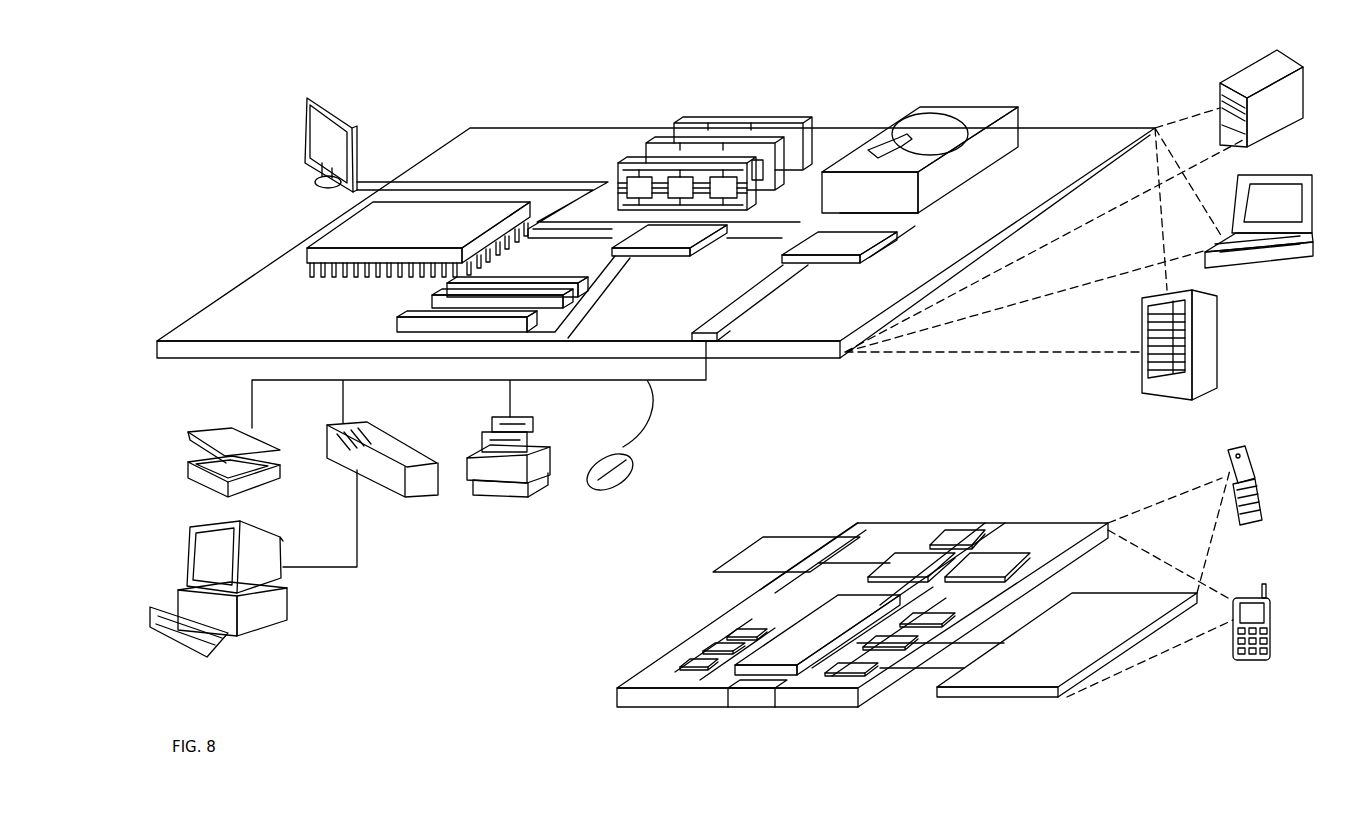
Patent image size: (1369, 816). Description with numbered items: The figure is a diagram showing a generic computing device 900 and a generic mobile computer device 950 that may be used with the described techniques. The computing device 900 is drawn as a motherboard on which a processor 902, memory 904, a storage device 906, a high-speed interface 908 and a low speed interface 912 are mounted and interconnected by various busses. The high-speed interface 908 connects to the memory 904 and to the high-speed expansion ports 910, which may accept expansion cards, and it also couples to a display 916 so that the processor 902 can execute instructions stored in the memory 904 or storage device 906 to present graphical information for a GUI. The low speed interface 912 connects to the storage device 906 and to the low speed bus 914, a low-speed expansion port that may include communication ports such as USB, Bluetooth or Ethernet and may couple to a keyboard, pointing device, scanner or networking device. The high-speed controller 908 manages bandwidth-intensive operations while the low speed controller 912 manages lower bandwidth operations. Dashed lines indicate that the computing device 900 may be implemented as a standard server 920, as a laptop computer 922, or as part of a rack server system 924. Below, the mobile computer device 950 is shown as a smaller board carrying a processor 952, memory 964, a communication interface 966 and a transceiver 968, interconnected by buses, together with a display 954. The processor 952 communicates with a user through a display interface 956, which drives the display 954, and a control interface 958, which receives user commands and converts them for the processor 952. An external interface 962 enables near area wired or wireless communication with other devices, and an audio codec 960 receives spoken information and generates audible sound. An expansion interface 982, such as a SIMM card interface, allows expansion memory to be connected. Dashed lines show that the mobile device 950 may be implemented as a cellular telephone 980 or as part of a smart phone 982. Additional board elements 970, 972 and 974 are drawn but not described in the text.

The computing device 900 is at (428, 78).
The processor 902 is at (330, 229).
The memory 904 is at (747, 120).
The storage device 906 is at (957, 106).
The high-speed interface 908 is at (680, 240).
The high-speed expansion ports 910 is at (425, 303).
The low speed interface 912 is at (816, 239).
The low speed bus 914 is at (711, 328).
The display 916 is at (310, 97).
The standard server 920 is at (1240, 80).
The laptop computer 922 is at (1290, 175).
The rack server system 924 is at (1222, 343).
The mobile computer device 950 is at (576, 712).
The processor 952 is at (789, 642).
The display 954 is at (1102, 610).
The display interface 956 is at (860, 665).
The control interface 958 is at (900, 641).
The audio codec 960 is at (932, 608).
The external interface 962 is at (752, 690).
The memory 964 is at (712, 648).
The communication interface 966 is at (910, 556).
The transceiver 968 is at (995, 557).
The chip 970 is at (958, 531).
The bus 972 is at (840, 535).
The battery 974 is at (764, 537).
The cellular telephone 980 is at (1235, 452).
The expansion interface 982 is at (1245, 598).